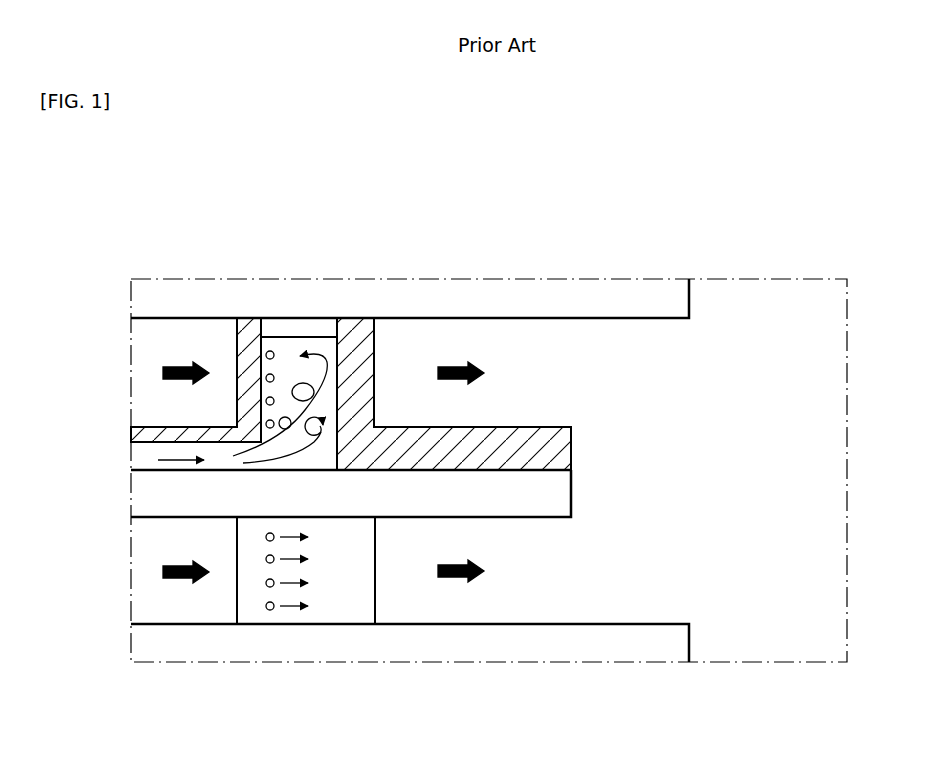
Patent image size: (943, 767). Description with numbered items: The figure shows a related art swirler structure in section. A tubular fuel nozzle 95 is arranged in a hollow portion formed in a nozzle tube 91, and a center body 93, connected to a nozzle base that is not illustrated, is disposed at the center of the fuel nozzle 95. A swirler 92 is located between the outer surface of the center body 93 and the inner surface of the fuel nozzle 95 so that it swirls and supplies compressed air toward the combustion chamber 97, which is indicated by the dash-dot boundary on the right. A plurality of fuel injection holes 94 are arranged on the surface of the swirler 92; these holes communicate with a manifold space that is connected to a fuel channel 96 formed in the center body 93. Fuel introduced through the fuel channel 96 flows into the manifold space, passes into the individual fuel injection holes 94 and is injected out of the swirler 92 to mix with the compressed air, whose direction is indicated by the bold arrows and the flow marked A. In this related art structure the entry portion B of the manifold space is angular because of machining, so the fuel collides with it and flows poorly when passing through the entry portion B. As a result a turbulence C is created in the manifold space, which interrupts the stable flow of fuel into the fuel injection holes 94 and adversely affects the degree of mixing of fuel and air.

The nozzle tube 91 is at (188, 643).
The swirler 92 is at (350, 587).
The center body 93 is at (157, 497).
The fuel injection hole 94 is at (266, 350).
The fuel nozzle 95 is at (543, 350).
The fuel channel 96 is at (143, 457).
The combustion chamber 97 is at (788, 473).
The main flow A is at (178, 365).
The entry portion B is at (256, 434).
The turbulence C is at (330, 347).